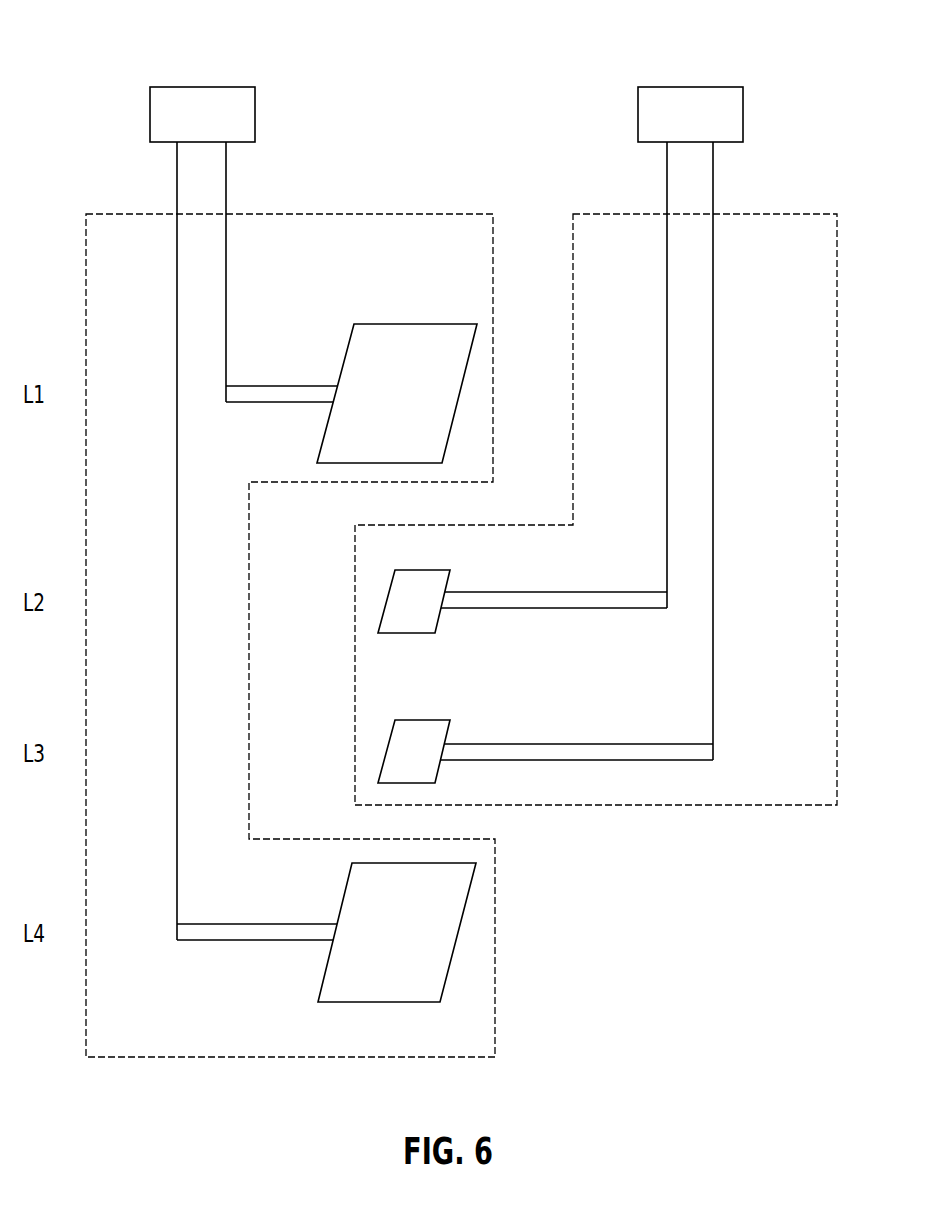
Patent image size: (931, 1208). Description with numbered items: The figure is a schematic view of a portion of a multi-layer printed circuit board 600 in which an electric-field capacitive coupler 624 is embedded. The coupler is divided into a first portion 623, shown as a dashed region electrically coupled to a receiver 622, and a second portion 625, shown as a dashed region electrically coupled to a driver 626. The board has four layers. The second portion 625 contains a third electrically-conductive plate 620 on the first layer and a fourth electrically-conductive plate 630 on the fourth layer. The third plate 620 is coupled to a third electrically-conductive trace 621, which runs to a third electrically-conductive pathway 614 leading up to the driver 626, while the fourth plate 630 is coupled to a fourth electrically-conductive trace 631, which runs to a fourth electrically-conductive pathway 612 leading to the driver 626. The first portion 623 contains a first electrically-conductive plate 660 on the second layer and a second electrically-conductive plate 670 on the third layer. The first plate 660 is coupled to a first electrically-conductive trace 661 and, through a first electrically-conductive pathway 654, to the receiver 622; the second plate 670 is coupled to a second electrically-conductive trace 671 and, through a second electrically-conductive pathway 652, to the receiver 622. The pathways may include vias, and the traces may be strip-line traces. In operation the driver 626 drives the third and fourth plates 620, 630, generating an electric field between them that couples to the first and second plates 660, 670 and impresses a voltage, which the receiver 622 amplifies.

The multi-layer printed circuit board 600 is at (738, 48).
The fourth electrically-conductive pathway 612 is at (177, 432).
The third electrically-conductive pathway 614 is at (226, 362).
The third electrically-conductive plate 620 is at (414, 323).
The third electrically-conductive trace 621 is at (278, 403).
The receiver 622 is at (713, 127).
The first portion 623 is at (797, 214).
The electric-field capacitive coupler 624 is at (436, 165).
The second portion 625 is at (142, 214).
The driver 626 is at (225, 127).
The fourth electrically-conductive plate 630 is at (385, 1002).
The fourth electrically-conductive trace 631 is at (263, 941).
The second electrically-conductive pathway 652 is at (713, 488).
The first electrically-conductive pathway 654 is at (667, 425).
The first electrically-conductive plate 660 is at (423, 570).
The first electrically-conductive trace 661 is at (555, 592).
The second electrically-conductive plate 670 is at (423, 720).
The second electrically-conductive trace 671 is at (555, 744).